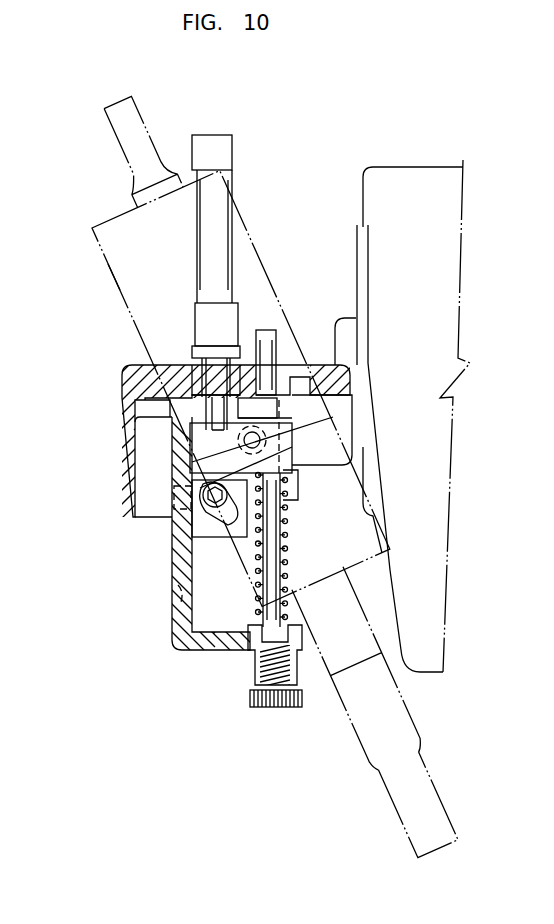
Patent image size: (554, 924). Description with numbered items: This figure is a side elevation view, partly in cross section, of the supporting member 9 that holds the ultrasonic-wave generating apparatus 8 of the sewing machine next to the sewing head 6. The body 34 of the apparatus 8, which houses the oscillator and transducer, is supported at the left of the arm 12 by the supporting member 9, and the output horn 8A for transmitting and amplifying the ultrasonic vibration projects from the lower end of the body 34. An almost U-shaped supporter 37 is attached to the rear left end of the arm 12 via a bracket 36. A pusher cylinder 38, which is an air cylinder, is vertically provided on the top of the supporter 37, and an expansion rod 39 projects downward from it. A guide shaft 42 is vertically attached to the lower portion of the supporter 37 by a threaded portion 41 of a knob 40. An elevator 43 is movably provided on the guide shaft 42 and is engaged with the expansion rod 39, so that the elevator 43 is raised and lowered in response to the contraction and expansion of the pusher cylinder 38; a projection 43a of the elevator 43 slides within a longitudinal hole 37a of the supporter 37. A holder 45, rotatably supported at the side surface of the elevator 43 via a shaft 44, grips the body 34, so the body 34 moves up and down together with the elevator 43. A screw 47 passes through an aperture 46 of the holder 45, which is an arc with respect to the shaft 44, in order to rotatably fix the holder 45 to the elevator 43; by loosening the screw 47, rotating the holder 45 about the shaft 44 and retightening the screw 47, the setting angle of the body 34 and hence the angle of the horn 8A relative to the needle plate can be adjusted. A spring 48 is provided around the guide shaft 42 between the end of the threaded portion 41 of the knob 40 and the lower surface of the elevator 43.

The sewing head 6 is at (424, 160).
The ultrasonic-wave generating apparatus 8 is at (108, 268).
The output horn 8A is at (403, 802).
The supporting member 9 is at (166, 664).
The arm 12 is at (372, 197).
The body 34 is at (120, 288).
The bracket 36 is at (127, 390).
The supporter 37 is at (175, 632).
The longitudinal hole 37a is at (178, 590).
The pusher cylinder 38 is at (233, 180).
The expansion rod 39 is at (187, 400).
The knob 40 is at (270, 710).
The threaded portion 41 is at (262, 680).
The guide shaft 42 is at (262, 602).
The elevator 43 is at (292, 452).
The projection 43a is at (180, 497).
The shaft 44 is at (290, 462).
The holder 45 is at (290, 492).
The aperture 46 is at (226, 530).
The screw 47 is at (205, 522).
The spring 48 is at (288, 578).